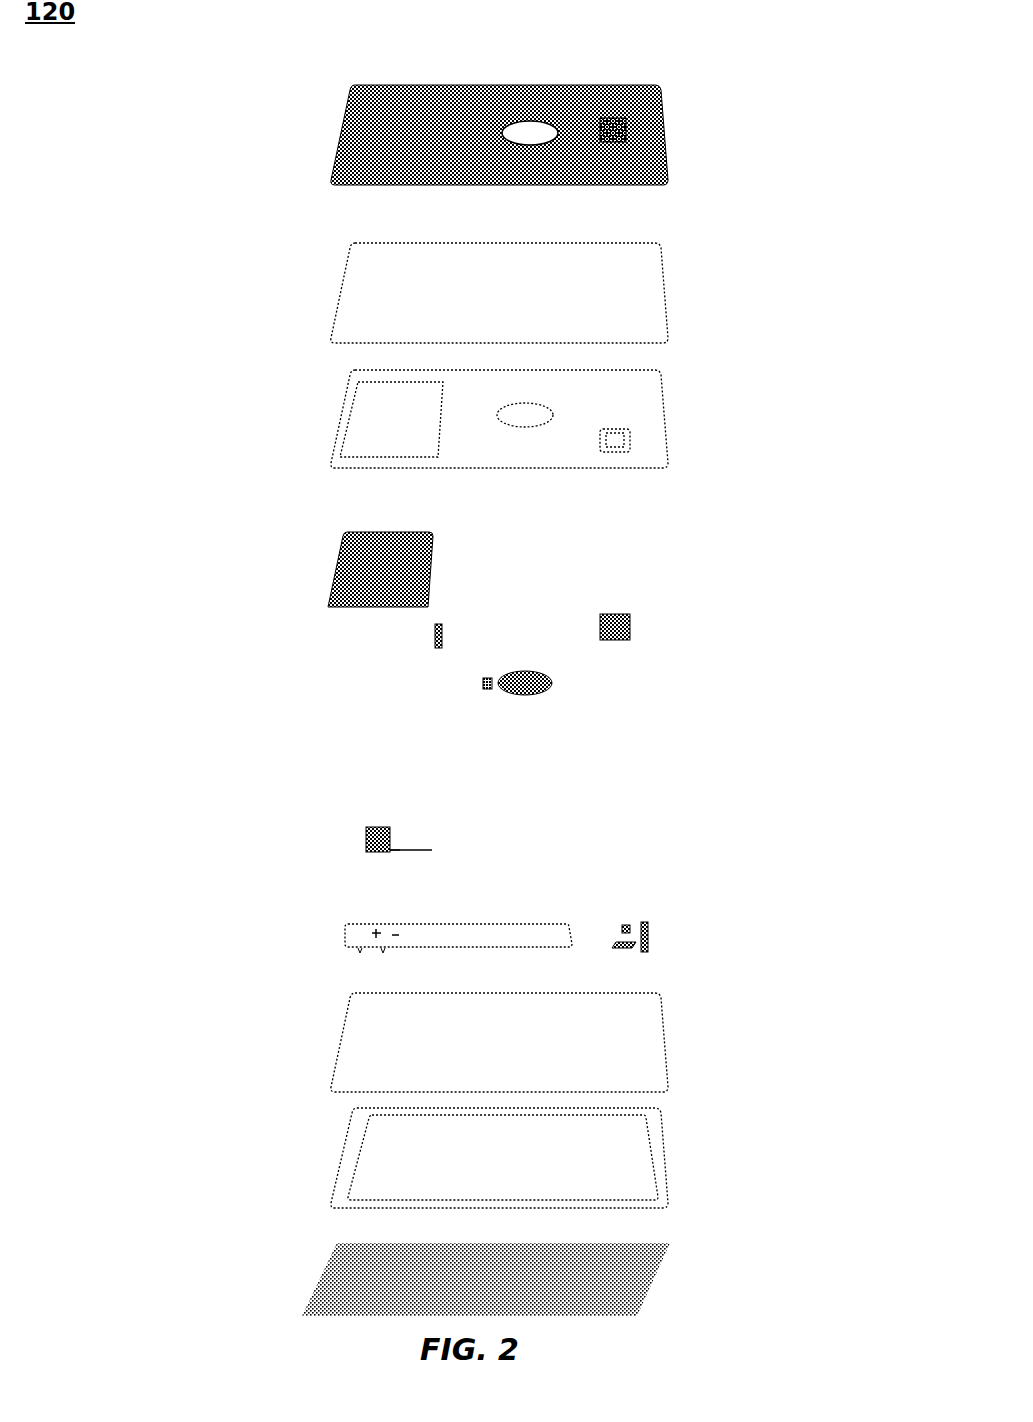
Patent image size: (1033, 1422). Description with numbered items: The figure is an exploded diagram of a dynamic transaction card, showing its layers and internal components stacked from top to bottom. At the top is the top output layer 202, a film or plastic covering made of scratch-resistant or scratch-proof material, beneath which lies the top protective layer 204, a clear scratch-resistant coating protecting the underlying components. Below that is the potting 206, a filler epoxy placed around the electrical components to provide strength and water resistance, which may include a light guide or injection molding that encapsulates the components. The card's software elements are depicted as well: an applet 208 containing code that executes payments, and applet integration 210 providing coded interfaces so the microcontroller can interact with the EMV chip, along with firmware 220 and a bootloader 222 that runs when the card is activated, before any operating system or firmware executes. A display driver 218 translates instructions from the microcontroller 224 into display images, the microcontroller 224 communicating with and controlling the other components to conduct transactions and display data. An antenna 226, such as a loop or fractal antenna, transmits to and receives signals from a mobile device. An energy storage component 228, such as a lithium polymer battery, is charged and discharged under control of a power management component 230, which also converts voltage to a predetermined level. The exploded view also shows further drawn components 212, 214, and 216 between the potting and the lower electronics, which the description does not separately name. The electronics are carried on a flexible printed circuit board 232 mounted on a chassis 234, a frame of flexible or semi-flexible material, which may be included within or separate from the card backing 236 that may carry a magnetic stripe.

The top output layer 202 is at (665, 126).
The top protective layer 204 is at (743, 292).
The potting 206 is at (699, 411).
The applet 208 is at (673, 515).
The applet integration 210 is at (673, 572).
The chip module 212 is at (636, 625).
The antenna coil 214 is at (561, 683).
The display 216 is at (340, 550).
The display driver 218 is at (433, 635).
The firmware 220 is at (336, 706).
The bootloader 222 is at (346, 775).
The microcontroller 224 is at (363, 838).
The antenna 226 is at (410, 856).
The energy storage component 228 is at (573, 938).
The power management component 230 is at (655, 933).
The flexible printed circuit board 232 is at (328, 1068).
The chassis 234 is at (672, 1150).
The card backing 236 is at (666, 1257).